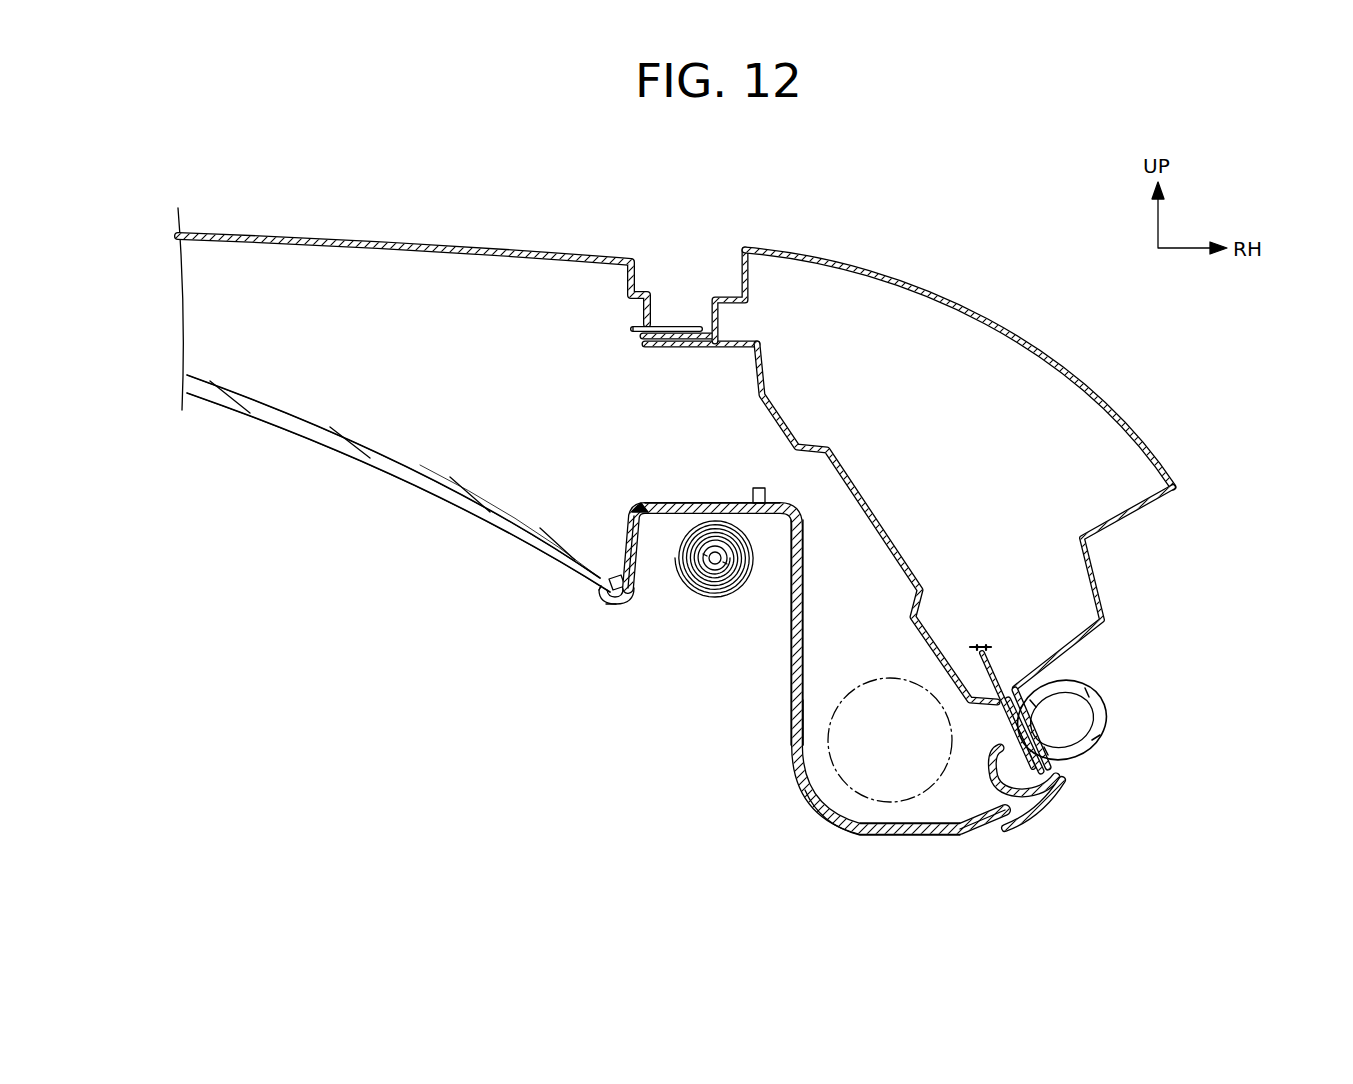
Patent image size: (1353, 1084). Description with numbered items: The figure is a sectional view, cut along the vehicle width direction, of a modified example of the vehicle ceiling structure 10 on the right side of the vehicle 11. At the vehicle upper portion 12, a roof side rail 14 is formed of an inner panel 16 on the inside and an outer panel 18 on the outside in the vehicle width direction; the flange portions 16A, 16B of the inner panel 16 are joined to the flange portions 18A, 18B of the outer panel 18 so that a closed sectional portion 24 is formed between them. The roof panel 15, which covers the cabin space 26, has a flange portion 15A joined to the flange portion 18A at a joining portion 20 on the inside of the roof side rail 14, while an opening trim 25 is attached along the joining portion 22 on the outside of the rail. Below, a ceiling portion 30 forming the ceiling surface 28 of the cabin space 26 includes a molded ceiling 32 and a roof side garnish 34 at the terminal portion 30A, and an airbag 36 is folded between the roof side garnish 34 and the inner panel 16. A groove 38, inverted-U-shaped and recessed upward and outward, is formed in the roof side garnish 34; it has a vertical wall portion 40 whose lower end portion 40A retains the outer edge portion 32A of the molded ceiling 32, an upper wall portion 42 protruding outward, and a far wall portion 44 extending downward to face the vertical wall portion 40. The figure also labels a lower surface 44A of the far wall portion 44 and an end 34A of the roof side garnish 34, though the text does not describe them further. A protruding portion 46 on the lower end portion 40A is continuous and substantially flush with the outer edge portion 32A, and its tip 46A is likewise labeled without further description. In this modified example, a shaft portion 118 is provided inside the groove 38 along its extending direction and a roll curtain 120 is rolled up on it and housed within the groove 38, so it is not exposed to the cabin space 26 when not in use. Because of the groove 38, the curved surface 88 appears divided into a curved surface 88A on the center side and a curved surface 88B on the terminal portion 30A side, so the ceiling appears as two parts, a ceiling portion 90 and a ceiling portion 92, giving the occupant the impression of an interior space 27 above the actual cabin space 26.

The roof panel 15 is at (442, 236).
The flange portion 15A is at (653, 324).
The flange portion 18A is at (683, 333).
The flange portion 16A is at (680, 348).
The joining portion 20 is at (626, 330).
The vehicle upper portion 12 is at (944, 465).
The vehicle 11 is at (944, 465).
The roof side rail 14 is at (1070, 367).
The outer panel 18 is at (1133, 430).
The inner panel 16 is at (880, 518).
The flange portion 16B is at (1000, 730).
The flange portion 18B is at (1040, 722).
The joining portion 22 is at (1005, 681).
The opening trim 25 is at (1110, 739).
The terminal portion 30A is at (1040, 812).
The curved surface 88 is at (406, 483).
The ceiling surface 28 is at (342, 456).
The ceiling portion 90 is at (268, 406).
The curved surface 88A is at (298, 430).
The molded ceiling 32 is at (478, 520).
The outer edge portion 32A is at (614, 580).
The ceiling portion 30 is at (680, 673).
The upper wall portion 42 is at (708, 504).
The far wall portion 44 is at (791, 637).
The ceiling portion 92 is at (791, 682).
The curved surface 88B is at (790, 728).
The roof side garnish 34 is at (836, 824).
The bottom surface 44A is at (890, 841).
The end of bottom wall 34A is at (978, 836).
The vertical wall portion 40 is at (625, 579).
The protruding portion 46 is at (622, 601).
The hook tip 46A is at (630, 603).
The lower end portion 40A is at (612, 605).
The shaft portion 118 is at (668, 561).
The roll curtain 120 is at (716, 600).
The airbag 36 is at (855, 710).
The interior space 27 is at (464, 399).
The closed sectional portion 24 is at (958, 471).
The cabin space 26 is at (404, 677).
The groove 38 is at (672, 720).
The vehicle ceiling structure 10 is at (665, 756).